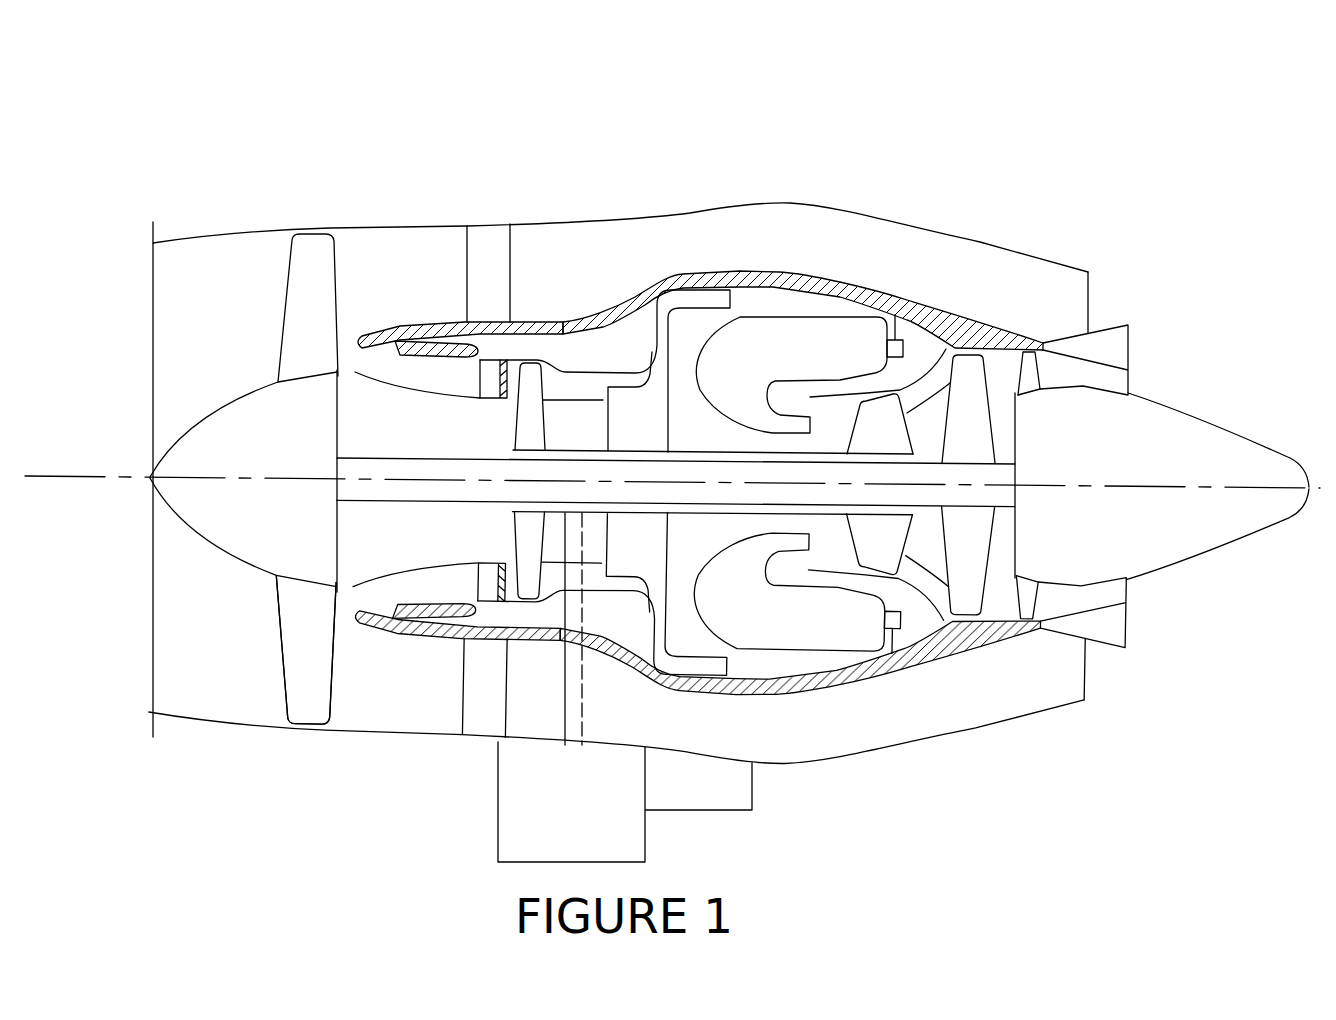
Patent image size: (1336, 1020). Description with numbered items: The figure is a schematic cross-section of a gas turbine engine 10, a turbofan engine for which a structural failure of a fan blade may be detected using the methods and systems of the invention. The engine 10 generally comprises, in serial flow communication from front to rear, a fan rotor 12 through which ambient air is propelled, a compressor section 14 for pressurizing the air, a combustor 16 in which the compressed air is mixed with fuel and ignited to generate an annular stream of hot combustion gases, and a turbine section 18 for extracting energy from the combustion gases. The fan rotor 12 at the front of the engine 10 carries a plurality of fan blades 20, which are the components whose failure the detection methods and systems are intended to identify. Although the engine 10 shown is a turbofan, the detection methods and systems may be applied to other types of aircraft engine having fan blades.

The gas turbine engine 10 is at (960, 150).
The fan rotor 12 is at (296, 316).
The compressor section 14 is at (567, 380).
The combustor 16 is at (792, 337).
The turbine section 18 is at (925, 555).
The fan blades 20 is at (300, 640).